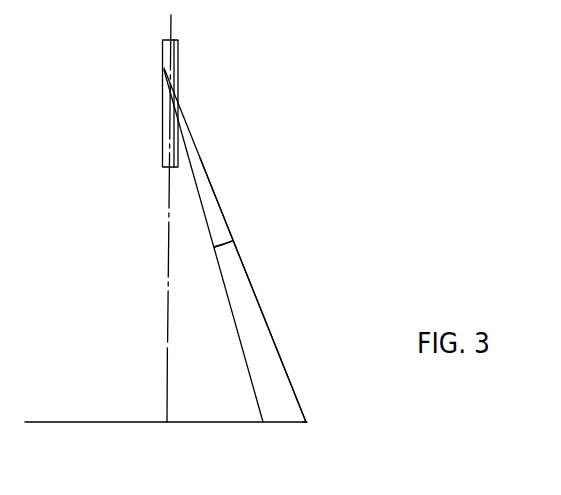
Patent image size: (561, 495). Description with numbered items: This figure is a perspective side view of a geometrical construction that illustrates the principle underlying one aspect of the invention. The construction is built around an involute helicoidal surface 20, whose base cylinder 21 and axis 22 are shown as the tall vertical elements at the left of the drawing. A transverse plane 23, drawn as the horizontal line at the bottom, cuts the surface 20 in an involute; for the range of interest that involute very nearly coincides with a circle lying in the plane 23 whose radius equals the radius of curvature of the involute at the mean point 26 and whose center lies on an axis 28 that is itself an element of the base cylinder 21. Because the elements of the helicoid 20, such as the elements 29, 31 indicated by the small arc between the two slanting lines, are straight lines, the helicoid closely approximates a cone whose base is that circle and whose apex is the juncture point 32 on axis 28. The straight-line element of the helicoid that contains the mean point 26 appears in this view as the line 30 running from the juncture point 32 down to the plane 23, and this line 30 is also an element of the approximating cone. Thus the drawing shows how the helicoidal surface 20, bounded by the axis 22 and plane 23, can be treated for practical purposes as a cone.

The involute helicoidal surface 20 is at (276, 377).
The base cylinder 21 is at (179, 62).
The axis 22 is at (167, 362).
The transverse plane 23 is at (233, 424).
The mean point 26 is at (307, 422).
The axis 28 is at (167, 288).
The element of helicoid 29 is at (226, 243).
The line 30 is at (263, 312).
The element of helicoid 31 is at (223, 244).
The juncture point 32 is at (175, 80).